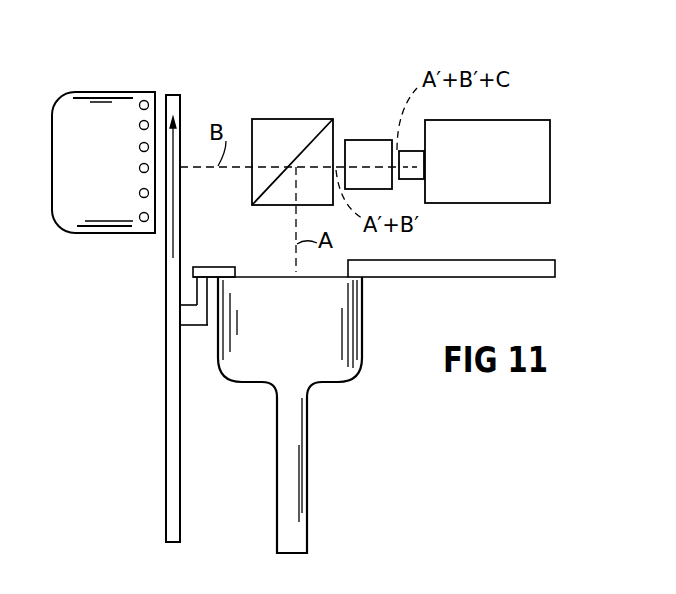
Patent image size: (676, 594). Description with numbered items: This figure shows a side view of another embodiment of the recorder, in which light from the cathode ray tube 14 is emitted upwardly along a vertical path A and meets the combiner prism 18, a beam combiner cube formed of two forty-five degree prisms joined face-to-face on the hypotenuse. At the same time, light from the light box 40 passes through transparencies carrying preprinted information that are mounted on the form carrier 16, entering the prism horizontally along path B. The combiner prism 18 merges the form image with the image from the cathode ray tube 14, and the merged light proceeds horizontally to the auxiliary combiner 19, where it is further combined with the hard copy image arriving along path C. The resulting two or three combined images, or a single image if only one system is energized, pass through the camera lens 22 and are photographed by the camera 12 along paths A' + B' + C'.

The light box 40 is at (55, 158).
The form carrier 16 is at (166, 284).
The combiner prism 18 is at (270, 206).
The auxiliary combiner 19 is at (372, 140).
The camera lens 22 is at (408, 151).
The camera 12 is at (490, 120).
The cathode ray tube 14 is at (363, 328).